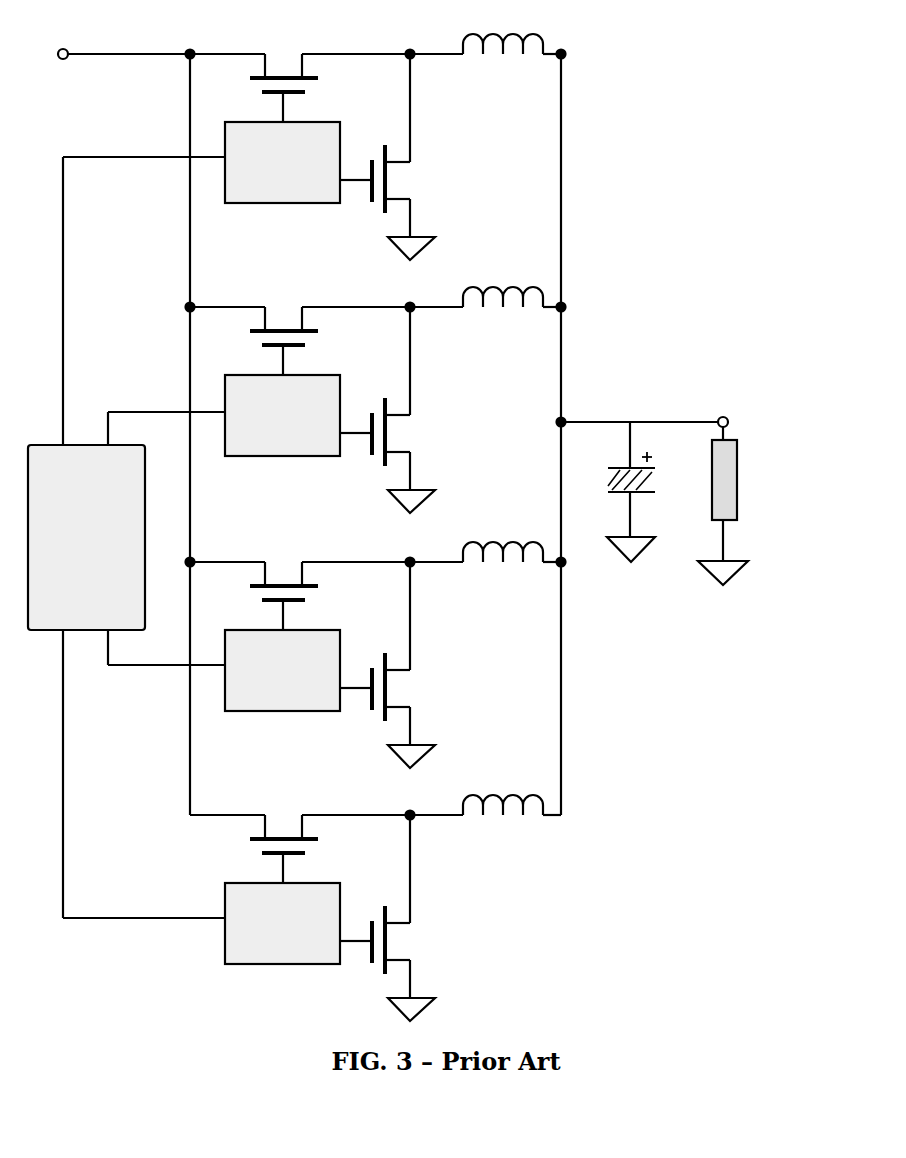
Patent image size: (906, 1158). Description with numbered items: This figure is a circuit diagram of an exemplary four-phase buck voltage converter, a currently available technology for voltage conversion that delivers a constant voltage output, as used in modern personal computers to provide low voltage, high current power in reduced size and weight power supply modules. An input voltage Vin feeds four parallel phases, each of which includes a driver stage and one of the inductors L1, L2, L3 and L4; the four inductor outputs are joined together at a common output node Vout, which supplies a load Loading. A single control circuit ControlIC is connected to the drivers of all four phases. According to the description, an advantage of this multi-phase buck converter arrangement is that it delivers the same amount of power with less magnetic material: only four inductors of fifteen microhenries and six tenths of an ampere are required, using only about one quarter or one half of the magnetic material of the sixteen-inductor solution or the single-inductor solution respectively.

The input voltage terminal Vin is at (119, 72).
The inductor of first phase L1 is at (376, 147).
The inductor of second phase L2 is at (376, 400).
The inductor of third phase L3 is at (376, 655).
The inductor of fourth phase L4 is at (375, 908).
The output voltage node Vout is at (643, 472).
The load Loading is at (766, 506).
The control IC ControlIC is at (86, 537).